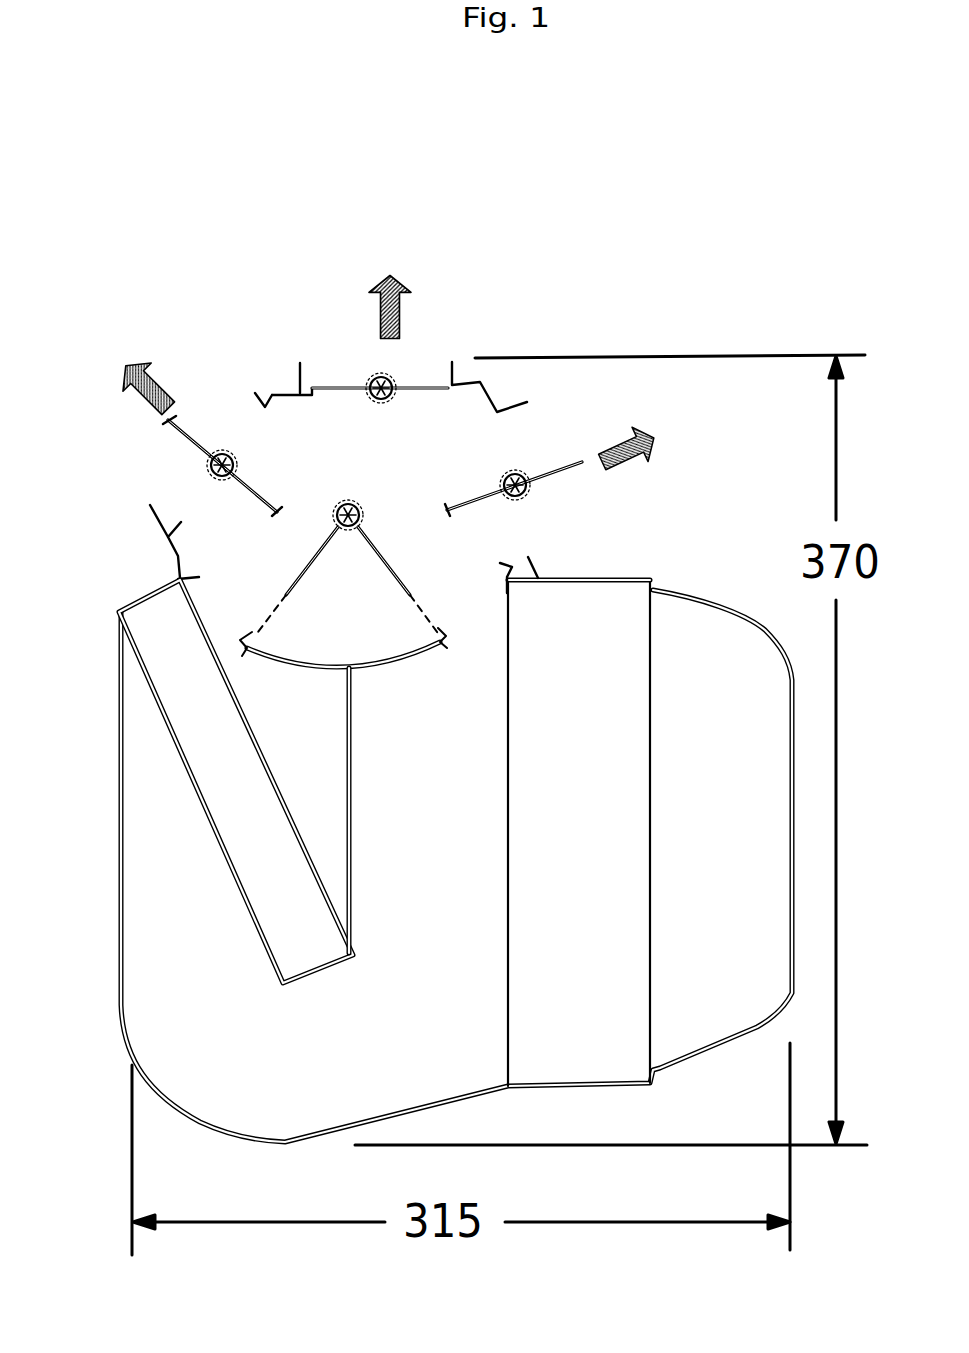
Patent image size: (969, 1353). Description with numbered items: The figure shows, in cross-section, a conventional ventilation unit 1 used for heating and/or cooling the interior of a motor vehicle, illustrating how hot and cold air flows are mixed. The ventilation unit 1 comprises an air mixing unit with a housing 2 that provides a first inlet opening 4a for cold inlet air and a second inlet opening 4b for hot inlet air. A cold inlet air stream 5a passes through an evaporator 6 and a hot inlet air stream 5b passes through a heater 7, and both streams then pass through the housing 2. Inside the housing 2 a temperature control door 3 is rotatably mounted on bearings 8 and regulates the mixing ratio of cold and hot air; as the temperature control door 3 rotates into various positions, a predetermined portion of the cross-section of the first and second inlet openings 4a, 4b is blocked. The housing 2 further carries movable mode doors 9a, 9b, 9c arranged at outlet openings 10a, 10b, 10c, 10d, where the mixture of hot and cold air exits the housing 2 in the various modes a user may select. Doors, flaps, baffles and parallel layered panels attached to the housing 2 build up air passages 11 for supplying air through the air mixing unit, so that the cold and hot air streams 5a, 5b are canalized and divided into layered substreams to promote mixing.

The ventilation unit 1 is at (598, 294).
The housing 2 is at (600, 562).
The temperature control door 3 is at (397, 653).
The first inlet opening 4a is at (462, 620).
The second inlet opening 4b is at (233, 657).
The cold inlet air stream 5a is at (467, 762).
The hot inlet air stream 5b is at (289, 755).
The evaporator 6 is at (656, 833).
The heater 7 is at (187, 717).
The bearings 8 is at (348, 503).
The mode door 9a is at (188, 428).
The mode door 9b is at (343, 385).
The mode door 9c is at (553, 468).
The outlet opening 10a is at (188, 468).
The outlet opening 10b is at (250, 432).
The outlet opening 10c is at (527, 428).
The outlet opening 10d is at (632, 488).
The air passages 11 is at (302, 493).